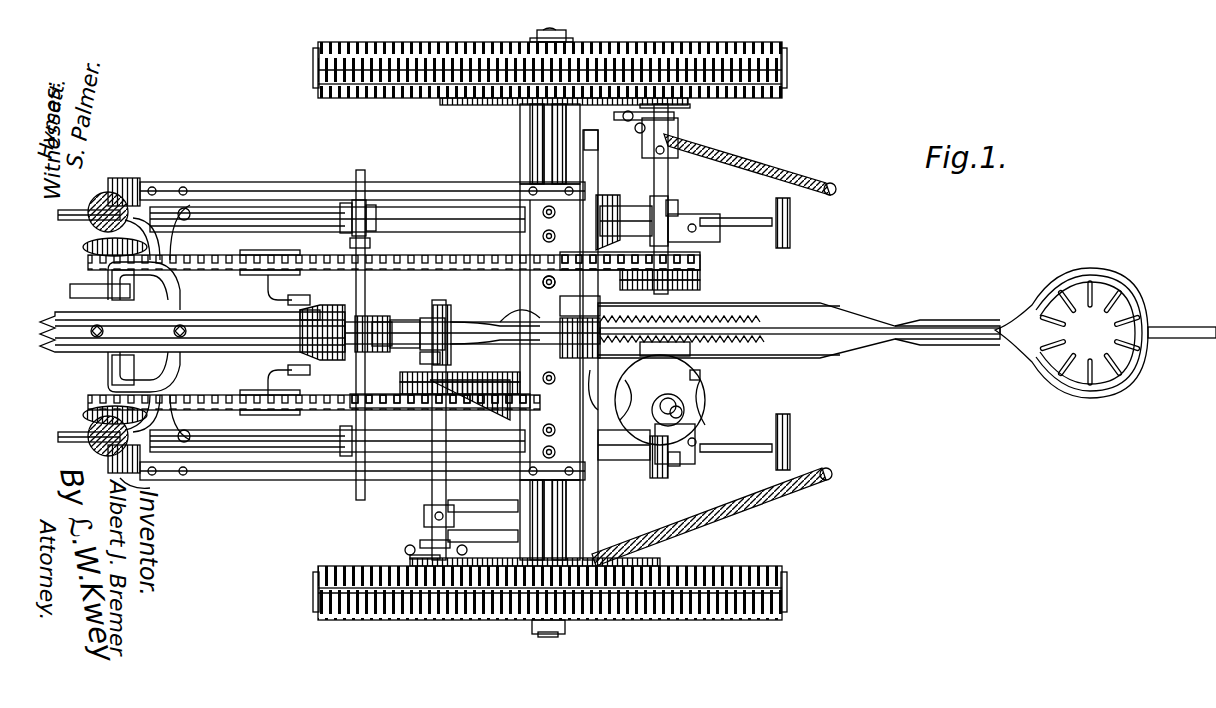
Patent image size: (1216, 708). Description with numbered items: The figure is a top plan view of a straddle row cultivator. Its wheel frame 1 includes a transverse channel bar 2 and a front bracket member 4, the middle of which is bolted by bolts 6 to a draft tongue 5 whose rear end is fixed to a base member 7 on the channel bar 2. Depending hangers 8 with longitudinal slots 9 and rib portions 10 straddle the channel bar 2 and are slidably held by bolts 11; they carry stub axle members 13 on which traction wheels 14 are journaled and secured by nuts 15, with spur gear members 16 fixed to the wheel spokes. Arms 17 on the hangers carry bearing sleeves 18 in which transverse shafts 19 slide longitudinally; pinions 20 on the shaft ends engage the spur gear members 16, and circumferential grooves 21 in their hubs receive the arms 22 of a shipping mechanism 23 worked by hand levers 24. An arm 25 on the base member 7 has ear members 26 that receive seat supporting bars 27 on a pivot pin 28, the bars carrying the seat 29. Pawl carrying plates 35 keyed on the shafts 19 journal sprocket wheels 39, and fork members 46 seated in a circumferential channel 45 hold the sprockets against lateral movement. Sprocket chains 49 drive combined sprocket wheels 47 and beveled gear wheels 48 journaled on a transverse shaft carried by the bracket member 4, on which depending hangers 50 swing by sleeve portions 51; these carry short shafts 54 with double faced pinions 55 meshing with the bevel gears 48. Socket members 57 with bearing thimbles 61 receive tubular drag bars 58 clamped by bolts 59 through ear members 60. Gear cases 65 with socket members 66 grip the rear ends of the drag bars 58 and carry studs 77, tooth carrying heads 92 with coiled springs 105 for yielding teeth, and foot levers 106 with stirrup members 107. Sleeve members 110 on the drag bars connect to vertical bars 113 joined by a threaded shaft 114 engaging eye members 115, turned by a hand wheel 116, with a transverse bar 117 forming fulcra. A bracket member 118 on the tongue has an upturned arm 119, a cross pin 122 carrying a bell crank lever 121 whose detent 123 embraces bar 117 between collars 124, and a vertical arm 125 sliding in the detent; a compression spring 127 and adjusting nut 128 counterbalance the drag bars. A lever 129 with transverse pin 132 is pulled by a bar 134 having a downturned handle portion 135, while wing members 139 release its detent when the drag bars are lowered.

The wheel frame 1 is at (585, 512).
The channel bar 2 is at (590, 458).
The bracket member 4 is at (180, 380).
The draft tongue 5 is at (312, 182).
The bolts 6 is at (97, 340).
The base member 7 is at (496, 322).
The depending hangers 8 is at (520, 122).
The longitudinally arranged slots 9 is at (548, 134).
The rib portions 10 is at (524, 160).
The bolts 11 is at (543, 236).
The stub axle members 13 is at (547, 30).
The traction wheels 14 is at (400, 32).
The nuts 15 is at (556, 32).
The spur gear members 16 is at (475, 104).
The arms 17 is at (480, 512).
The bearing sleeves 18 is at (424, 514).
The transverse shafts 19 is at (432, 496).
The pinions 20 is at (410, 556).
The circumferential grooves 21 is at (406, 552).
The arms 22 is at (420, 543).
The shipping mechanism 23 is at (470, 550).
The hand levers 24 is at (780, 172).
The arm 25 is at (603, 268).
The ear members 26 is at (560, 300).
The seat supporting bars 27 is at (848, 302).
The pivot pin 28 is at (662, 398).
The seat 29 is at (1022, 360).
The pawl carrying plates 35 is at (400, 378).
The sprocket wheels 39 is at (430, 412).
The circumferential channel 45 is at (400, 388).
The fork members 46 is at (600, 306).
The sprocket wheels 47 is at (112, 278).
The beveled gear wheels 48 is at (84, 246).
The sprocket chains 49 is at (418, 258).
The depending hangers 50 is at (72, 214).
The sleeve portions 51 is at (100, 200).
The short shafts 54 is at (690, 350).
The double faced pinions 55 is at (124, 178).
The socket members 57 is at (337, 329).
The tubular drag bars 58 is at (270, 262).
The bolts 59 is at (200, 200).
The ear members 60 is at (192, 212).
The bearing thimbles 61 is at (150, 215).
The gear cases 65 is at (648, 210).
The socket members 66 is at (608, 230).
The studs 77 is at (678, 204).
The tooth carrying heads 92 is at (700, 222).
The coiled springs 105 is at (700, 374).
The foot levers 106 is at (752, 218).
The stirrup members 107 is at (790, 224).
The sleeve members 110 is at (370, 216).
The vertically arranged bars 113 is at (348, 203).
The transversely arranged shaft 114 is at (360, 200).
The eye members 115 is at (374, 205).
The hand wheel 116 is at (360, 490).
The transversely arranged bar 117 is at (372, 244).
The bracket member 118 is at (296, 300).
The upturned arm 119 is at (522, 318).
The bell crank lever 121 is at (405, 320).
The cross pin 122 is at (452, 318).
The detent 123 is at (378, 310).
The collars 124 is at (322, 310).
The vertically arranged arm 125 is at (306, 362).
The compression spring 127 is at (720, 322).
The adjusting nut 128 is at (730, 342).
The lever 129 is at (420, 358).
The transverse pin 132 is at (437, 318).
The bar 134 is at (786, 334).
The downturned handle portion 135 is at (916, 318).
The wing members 139 is at (396, 318).